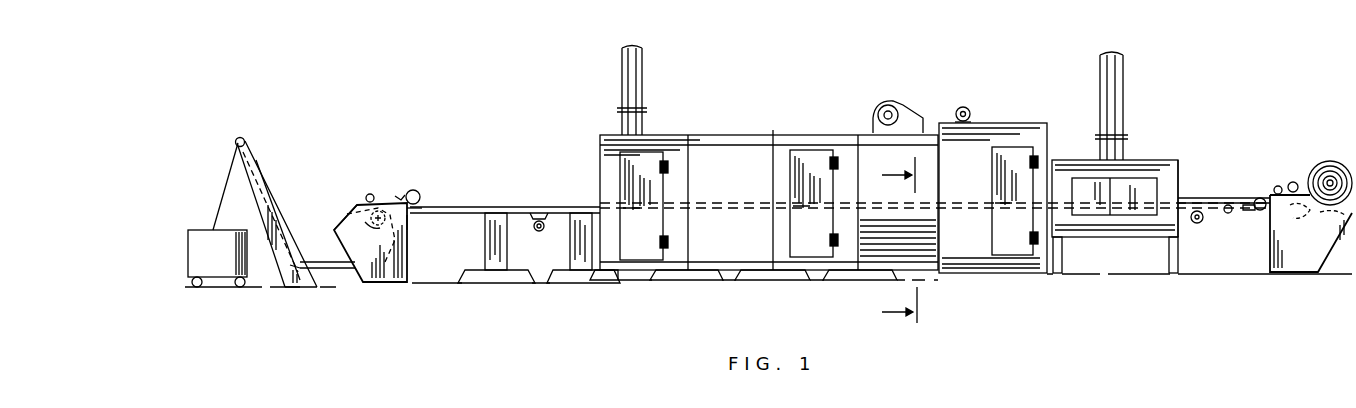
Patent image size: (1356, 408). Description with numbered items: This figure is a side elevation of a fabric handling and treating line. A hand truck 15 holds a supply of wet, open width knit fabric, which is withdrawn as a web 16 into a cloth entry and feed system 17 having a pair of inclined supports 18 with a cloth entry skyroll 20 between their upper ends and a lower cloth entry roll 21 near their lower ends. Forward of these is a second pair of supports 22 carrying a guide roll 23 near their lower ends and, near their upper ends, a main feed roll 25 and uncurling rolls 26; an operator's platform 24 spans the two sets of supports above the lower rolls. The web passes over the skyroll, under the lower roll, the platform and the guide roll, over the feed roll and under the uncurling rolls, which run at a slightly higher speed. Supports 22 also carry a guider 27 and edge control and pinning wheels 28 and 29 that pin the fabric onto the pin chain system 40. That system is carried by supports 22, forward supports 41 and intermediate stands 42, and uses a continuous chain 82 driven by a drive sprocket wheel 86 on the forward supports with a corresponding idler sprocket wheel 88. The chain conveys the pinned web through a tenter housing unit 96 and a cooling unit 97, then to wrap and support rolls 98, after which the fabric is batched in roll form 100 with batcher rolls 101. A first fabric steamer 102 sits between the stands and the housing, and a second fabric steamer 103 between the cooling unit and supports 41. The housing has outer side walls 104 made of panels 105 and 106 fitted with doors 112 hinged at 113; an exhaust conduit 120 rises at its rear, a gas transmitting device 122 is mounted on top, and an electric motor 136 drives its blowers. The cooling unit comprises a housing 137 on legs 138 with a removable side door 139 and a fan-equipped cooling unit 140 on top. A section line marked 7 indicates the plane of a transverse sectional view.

The section line 7- 7 is at (908, 240).
The hand truck 15 is at (231, 261).
The fabric web 16 is at (226, 188).
The cloth entry and feed system 17 is at (269, 174).
The inclined supports 18 is at (280, 218).
The cloth entry skyroll 20 is at (245, 139).
The lower cloth entry roll 21 is at (288, 268).
The second pair of supports 22 is at (390, 283).
The guide roll 23 is at (360, 284).
The operator's platform 24 is at (326, 262).
The main feed roll 25 is at (347, 207).
The uncurling rolls 26 is at (367, 194).
The guider 27 is at (400, 193).
The fabric edge control and pinning wheel 28 is at (421, 193).
The fabric edge control and pinning wheel 29 is at (416, 212).
The pin chain system 40 is at (520, 201).
The forward supports 41 is at (1272, 273).
The stands 42 is at (566, 286).
The continuous chain 82 is at (410, 226).
The drive sprocket wheel 86 is at (1296, 220).
The idler sprocket wheel 88 is at (378, 237).
The tenter housing unit 96 is at (801, 122).
The cooling unit 97 is at (1156, 156).
The wrap and support rolls 98 is at (1229, 214).
The roll form 100 is at (1330, 161).
The batcher rolls 101 is at (1326, 226).
The first fabric steamer 102 is at (537, 231).
The second fabric steamer 103 is at (1194, 223).
The outer side walls 104 is at (738, 260).
The side wall panel 105 is at (699, 138).
The side wall panel 106 is at (1022, 123).
The doors 112 is at (655, 241).
The hinges 113 is at (668, 170).
The exhaust conduit 120 is at (642, 65).
The gas transmitting device 122 is at (899, 106).
The electric motor 136 is at (966, 107).
The cooling unit housing 137 is at (1180, 165).
The legs 138 is at (1062, 266).
The removable panel or side door 139 is at (1125, 215).
The cooling unit 140 is at (1124, 115).